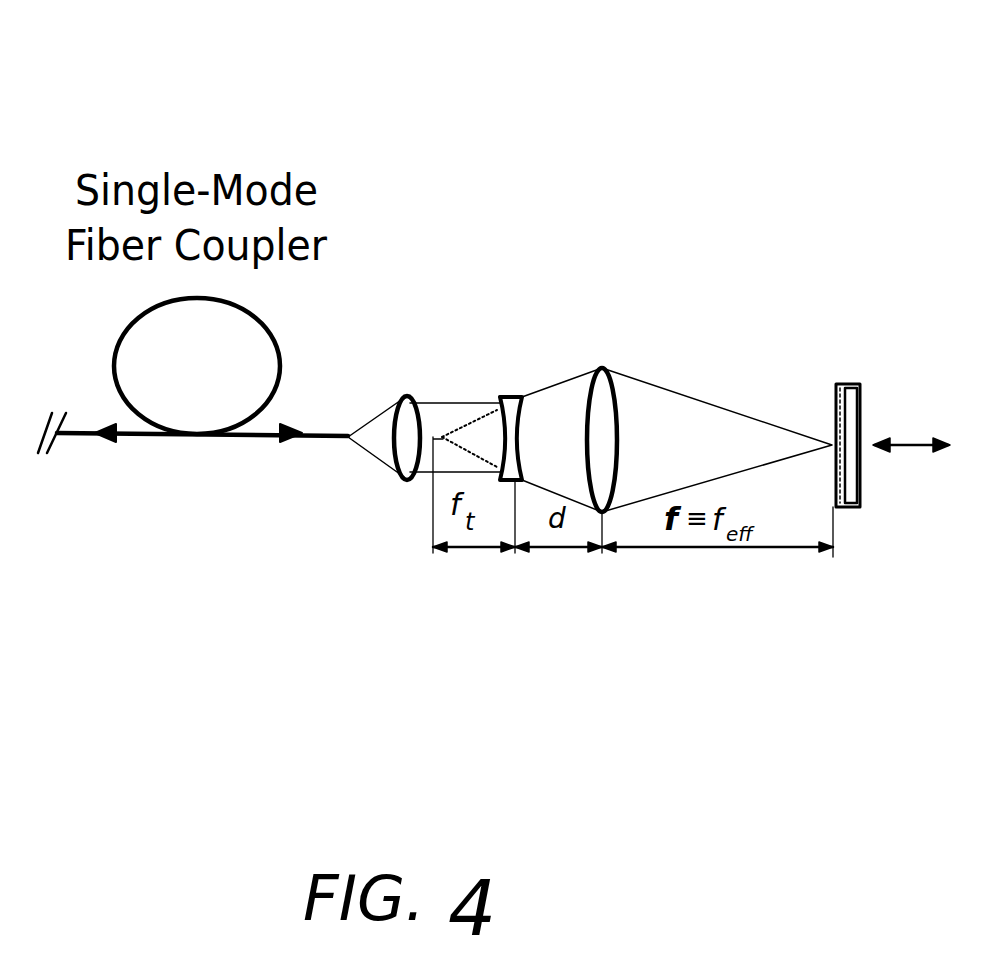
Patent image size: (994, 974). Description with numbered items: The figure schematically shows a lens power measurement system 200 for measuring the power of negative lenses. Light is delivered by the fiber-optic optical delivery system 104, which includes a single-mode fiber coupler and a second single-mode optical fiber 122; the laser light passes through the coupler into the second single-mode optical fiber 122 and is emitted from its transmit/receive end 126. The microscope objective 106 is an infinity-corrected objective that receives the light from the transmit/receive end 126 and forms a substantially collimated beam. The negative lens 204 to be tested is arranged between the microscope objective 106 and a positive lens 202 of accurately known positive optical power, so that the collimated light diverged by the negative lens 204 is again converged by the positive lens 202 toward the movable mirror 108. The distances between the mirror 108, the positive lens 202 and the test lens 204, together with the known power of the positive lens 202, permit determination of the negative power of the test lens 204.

The lens power measurement system 200 is at (536, 150).
The negative lens 204 is at (508, 396).
The positive lens 202 is at (614, 430).
The second single-mode optical fiber 122 is at (83, 435).
The transmit/receive end 126 is at (347, 437).
The microscope objective 106 is at (405, 482).
The optical delivery system 104 is at (125, 623).
The movable mirror 108 is at (847, 507).